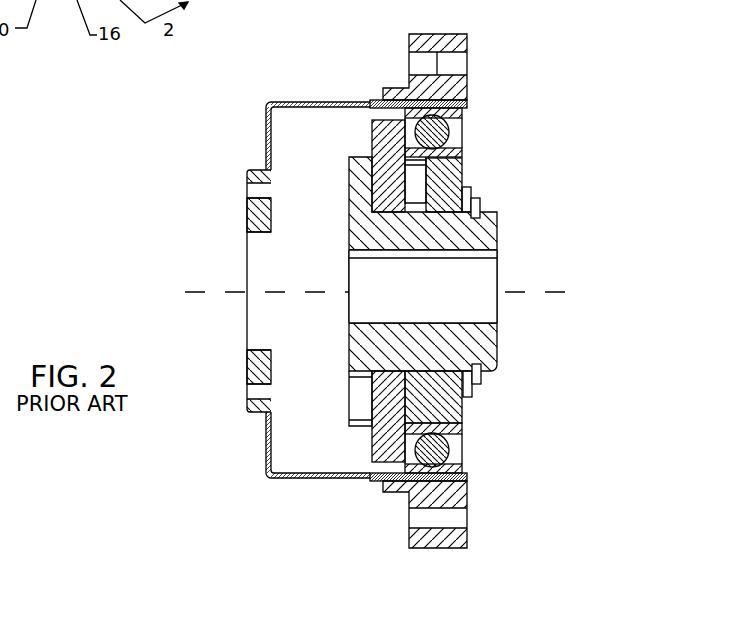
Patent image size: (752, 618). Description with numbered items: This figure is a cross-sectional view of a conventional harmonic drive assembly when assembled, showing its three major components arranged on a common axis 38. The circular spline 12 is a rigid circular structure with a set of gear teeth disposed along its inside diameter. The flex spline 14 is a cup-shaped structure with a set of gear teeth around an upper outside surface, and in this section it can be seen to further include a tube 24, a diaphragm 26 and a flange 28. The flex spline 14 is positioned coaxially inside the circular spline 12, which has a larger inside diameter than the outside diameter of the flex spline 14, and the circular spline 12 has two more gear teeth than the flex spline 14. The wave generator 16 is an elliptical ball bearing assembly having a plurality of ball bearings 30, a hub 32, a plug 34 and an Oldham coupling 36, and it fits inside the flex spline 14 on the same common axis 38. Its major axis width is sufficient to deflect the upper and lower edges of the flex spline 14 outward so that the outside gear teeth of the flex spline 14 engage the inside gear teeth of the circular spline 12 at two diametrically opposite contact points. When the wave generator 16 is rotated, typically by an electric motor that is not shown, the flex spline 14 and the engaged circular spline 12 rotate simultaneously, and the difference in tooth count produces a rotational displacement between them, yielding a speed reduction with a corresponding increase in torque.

The circular spline 12 is at (440, 33).
The flex spline 14 is at (465, 108).
The wave generator 16 is at (497, 240).
The tube 24 is at (338, 478).
The diaphragm 26 is at (265, 437).
The flange 28 is at (248, 217).
The ball bearings 30 is at (455, 128).
The hub 32 is at (497, 212).
The plug 34 is at (452, 418).
The Oldham coupling 36 is at (377, 448).
The common axis 38 is at (552, 292).